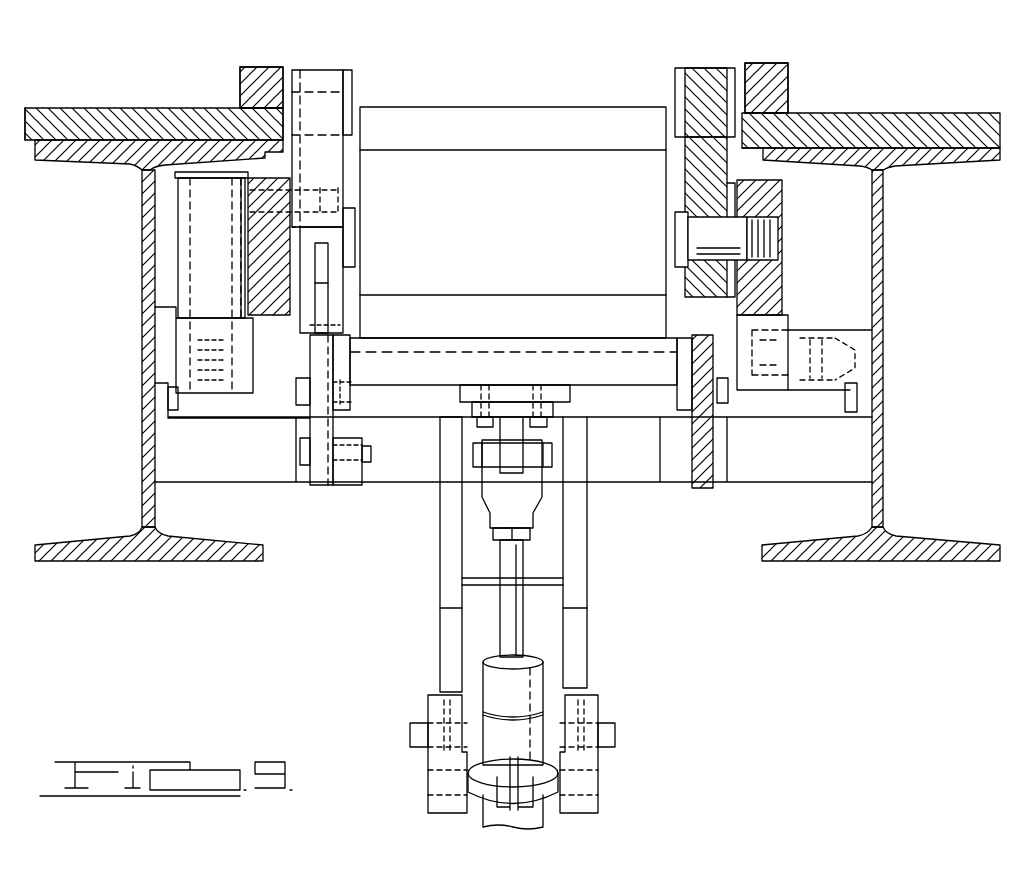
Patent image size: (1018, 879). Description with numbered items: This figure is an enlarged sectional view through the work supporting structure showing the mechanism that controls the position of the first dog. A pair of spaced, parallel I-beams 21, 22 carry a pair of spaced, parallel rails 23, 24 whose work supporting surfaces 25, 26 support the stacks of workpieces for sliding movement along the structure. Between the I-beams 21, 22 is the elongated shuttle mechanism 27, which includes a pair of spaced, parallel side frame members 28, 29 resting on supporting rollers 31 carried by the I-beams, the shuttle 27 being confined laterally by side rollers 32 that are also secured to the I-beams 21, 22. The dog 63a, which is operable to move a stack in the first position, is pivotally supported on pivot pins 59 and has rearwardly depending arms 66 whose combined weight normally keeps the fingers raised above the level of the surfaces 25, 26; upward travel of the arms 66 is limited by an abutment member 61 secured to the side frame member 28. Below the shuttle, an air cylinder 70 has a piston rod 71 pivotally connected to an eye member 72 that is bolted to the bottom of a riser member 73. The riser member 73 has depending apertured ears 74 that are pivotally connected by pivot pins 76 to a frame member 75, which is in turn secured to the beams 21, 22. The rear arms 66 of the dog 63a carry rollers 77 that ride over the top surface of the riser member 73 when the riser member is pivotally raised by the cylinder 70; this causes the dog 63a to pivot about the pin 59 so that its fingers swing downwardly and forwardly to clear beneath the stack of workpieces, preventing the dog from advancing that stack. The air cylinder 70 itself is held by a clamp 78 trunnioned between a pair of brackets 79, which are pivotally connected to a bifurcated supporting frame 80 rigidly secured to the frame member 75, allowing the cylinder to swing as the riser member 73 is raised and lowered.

The I-beam 21 is at (145, 340).
The I-beam 22 is at (880, 330).
The rail 23 is at (258, 88).
The rail 24 is at (780, 95).
The work supporting surface 25 is at (283, 67).
The work supporting surface 26 is at (772, 65).
The shuttle mechanism 27 is at (245, 240).
The side frame member 28 is at (262, 275).
The side frame member 29 is at (762, 292).
The supporting roller 31 is at (765, 392).
The side roller 32 is at (182, 205).
The pivot pin 59 is at (678, 238).
The abutment member 61 is at (332, 170).
The dog 63a is at (675, 80).
The rearwardly depending arm 66 is at (300, 320).
The air cylinder 70 is at (486, 692).
The piston rod 71 is at (525, 566).
The eye member 72 is at (522, 438).
The riser member 73 is at (688, 372).
The apertured ear 74 is at (318, 408).
The frame member 75 is at (384, 475).
The pivot pin 76 is at (320, 455).
The roller 77 is at (322, 290).
The clamp 78 is at (548, 788).
The bracket 79 is at (440, 802).
The bifurcated supporting frame 80 is at (580, 600).